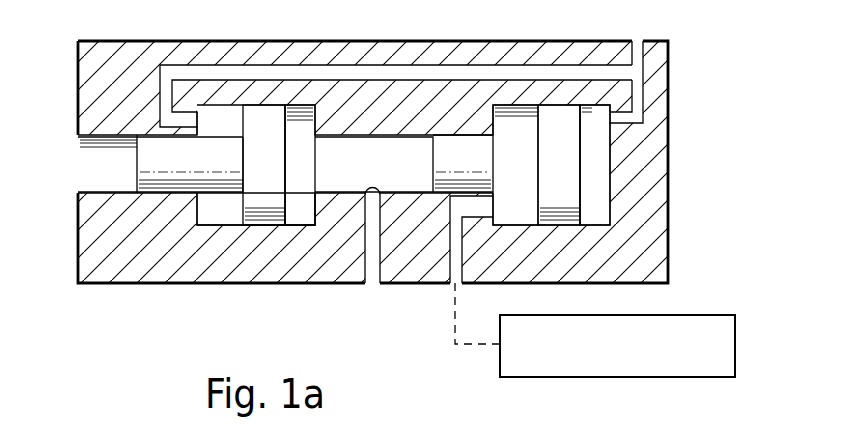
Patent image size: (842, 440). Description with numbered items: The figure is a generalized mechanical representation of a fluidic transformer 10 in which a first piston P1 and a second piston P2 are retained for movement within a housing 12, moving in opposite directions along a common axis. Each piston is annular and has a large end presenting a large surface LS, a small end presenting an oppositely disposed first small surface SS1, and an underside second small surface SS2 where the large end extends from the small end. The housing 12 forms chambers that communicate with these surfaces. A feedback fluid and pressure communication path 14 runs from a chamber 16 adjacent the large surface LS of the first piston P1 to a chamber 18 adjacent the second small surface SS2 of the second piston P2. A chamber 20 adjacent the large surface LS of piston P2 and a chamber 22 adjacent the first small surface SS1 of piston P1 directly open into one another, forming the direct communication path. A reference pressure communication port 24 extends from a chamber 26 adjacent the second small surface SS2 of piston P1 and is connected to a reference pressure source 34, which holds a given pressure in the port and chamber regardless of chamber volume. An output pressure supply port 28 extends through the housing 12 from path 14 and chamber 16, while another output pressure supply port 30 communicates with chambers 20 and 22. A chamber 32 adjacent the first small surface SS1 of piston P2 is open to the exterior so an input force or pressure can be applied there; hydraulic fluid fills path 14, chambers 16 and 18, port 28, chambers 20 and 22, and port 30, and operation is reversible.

The fluidic transformer 10 is at (703, 57).
The housing 12 is at (428, 47).
The feedback internal fluid and pressure communication path 14 is at (275, 70).
The chamber 16 is at (598, 142).
The chamber 18 is at (208, 218).
The chamber 20 is at (300, 122).
The chamber 22 is at (368, 180).
The reference pressure communication port 24 is at (455, 275).
The chamber 26 is at (512, 120).
The output pressure supply port 28 is at (638, 47).
The output pressure supply port 30 is at (371, 284).
The chamber 32 is at (90, 177).
The reference pressure source 34 is at (660, 378).
The first piston P1 is at (568, 172).
The second piston P2 is at (276, 170).
The first small surface SS1 is at (137, 158).
The second small surface SS2 is at (208, 218).
The large surface LS is at (288, 203).